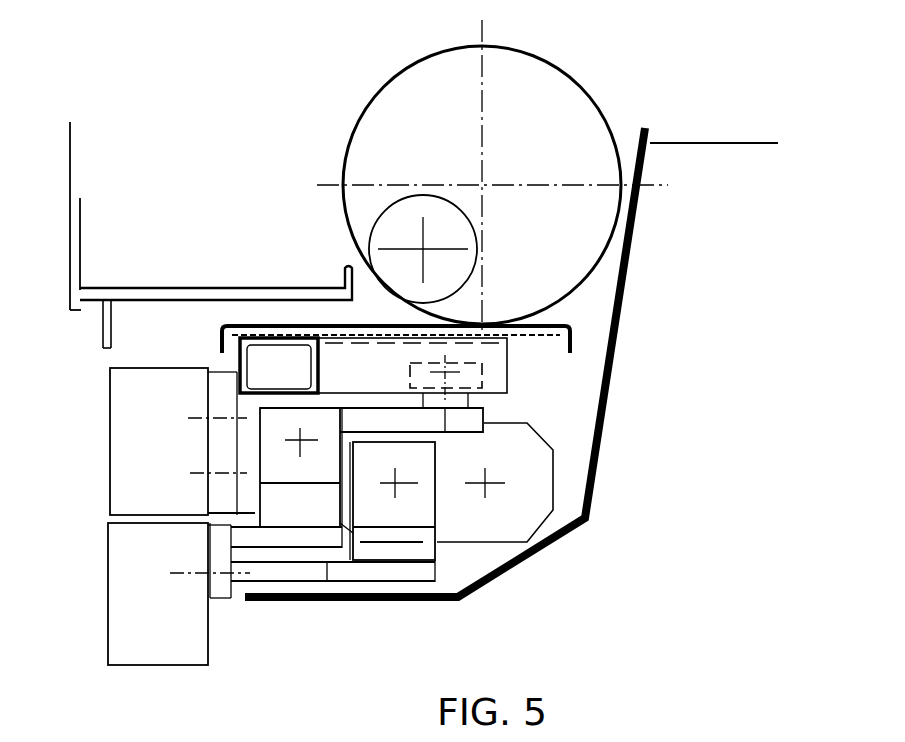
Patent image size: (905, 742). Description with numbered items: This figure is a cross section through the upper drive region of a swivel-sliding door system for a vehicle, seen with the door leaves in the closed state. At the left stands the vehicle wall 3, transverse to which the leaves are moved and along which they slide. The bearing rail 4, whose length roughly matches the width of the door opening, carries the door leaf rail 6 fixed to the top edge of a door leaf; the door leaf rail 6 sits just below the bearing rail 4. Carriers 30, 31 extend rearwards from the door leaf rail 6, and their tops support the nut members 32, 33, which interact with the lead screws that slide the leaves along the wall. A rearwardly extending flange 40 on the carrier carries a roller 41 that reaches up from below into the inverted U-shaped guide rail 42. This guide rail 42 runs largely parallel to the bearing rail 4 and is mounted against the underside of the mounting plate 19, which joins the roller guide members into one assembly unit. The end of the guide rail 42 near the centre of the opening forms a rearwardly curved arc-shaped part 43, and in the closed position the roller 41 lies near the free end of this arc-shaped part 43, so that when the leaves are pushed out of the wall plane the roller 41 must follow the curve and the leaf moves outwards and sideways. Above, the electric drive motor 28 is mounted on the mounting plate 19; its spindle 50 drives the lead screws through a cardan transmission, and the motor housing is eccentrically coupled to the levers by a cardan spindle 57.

The drive motor 28 is at (443, 119).
The spindle 50 is at (482, 185).
The cardan spindle 57 is at (393, 232).
The vehicle wall 3 is at (74, 235).
The mounting plate 19 is at (567, 325).
The arc-shaped part 43 is at (493, 355).
The guide rail 42 is at (237, 362).
The roller 41 is at (470, 378).
The flange 40 is at (450, 426).
The nut member 33 is at (273, 427).
The bearing rail 4 is at (162, 468).
The nut member 32 is at (413, 500).
The door leaf rail 6 is at (165, 608).
The carrier 31 is at (310, 538).
The carrier 30 is at (265, 570).